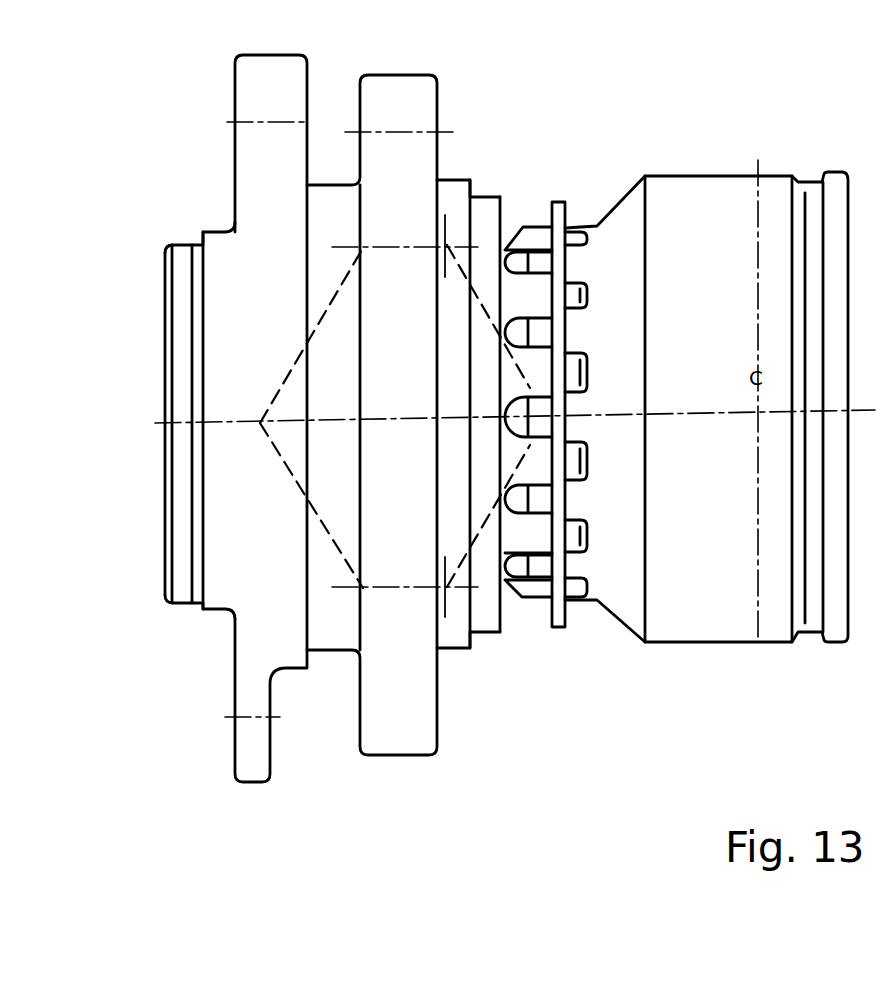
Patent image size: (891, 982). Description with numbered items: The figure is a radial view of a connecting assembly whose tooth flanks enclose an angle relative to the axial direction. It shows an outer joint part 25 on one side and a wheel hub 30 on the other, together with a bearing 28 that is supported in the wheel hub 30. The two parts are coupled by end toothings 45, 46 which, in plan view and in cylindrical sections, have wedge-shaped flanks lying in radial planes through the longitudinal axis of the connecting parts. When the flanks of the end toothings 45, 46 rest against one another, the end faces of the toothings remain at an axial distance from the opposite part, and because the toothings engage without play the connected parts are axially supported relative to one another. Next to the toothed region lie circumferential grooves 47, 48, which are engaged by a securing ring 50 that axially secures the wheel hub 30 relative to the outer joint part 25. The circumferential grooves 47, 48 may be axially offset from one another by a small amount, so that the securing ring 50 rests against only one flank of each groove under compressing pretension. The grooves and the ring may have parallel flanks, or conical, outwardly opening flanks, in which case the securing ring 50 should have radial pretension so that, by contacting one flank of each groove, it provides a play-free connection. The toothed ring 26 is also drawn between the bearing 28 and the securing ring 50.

The outer joint part 25 is at (690, 207).
The toothed ring 26 is at (504, 273).
The bearing 28 is at (458, 195).
The wheel hub 30 is at (220, 250).
The end toothing 45 is at (578, 500).
The end toothing 46 is at (527, 540).
The circumferential groove 47 is at (570, 548).
The circumferential groove 48 is at (545, 562).
The securing ring 50 is at (558, 630).